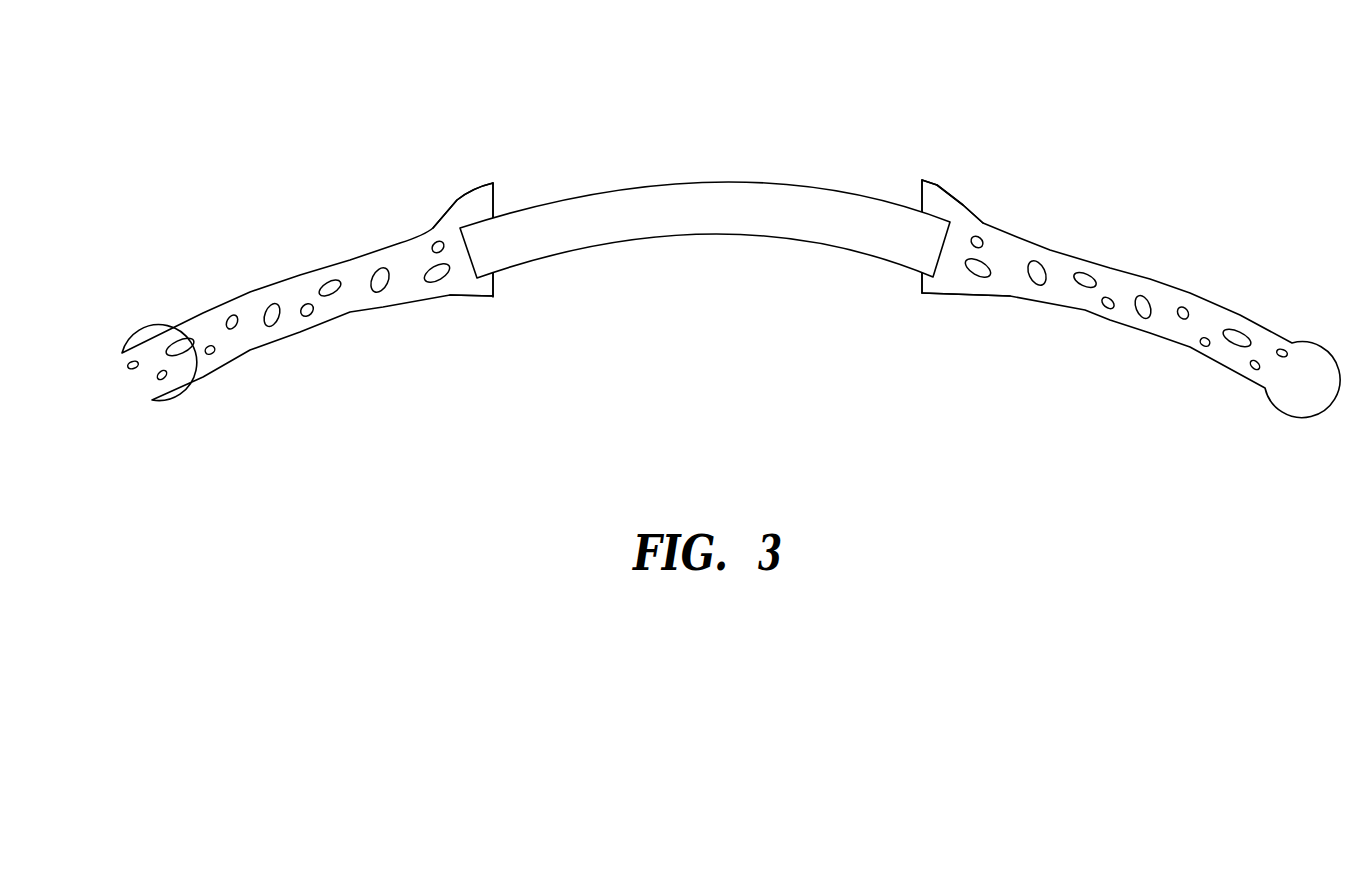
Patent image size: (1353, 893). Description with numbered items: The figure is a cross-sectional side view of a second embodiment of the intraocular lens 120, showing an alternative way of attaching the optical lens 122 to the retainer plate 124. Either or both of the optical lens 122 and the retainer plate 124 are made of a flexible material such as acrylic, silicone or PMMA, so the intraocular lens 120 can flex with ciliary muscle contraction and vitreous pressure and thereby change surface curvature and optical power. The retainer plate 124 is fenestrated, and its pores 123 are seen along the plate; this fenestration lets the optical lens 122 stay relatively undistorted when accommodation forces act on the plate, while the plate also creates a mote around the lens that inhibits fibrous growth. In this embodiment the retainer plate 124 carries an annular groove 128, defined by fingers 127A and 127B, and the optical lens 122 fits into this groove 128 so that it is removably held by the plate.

The intraocular lens 120 is at (731, 232).
The optical lens 122 is at (808, 198).
The pores 123 is at (272, 307).
The retainer plate 124 is at (330, 312).
The finger 127A is at (487, 207).
The finger 127B is at (935, 202).
The annular groove 128 is at (500, 280).